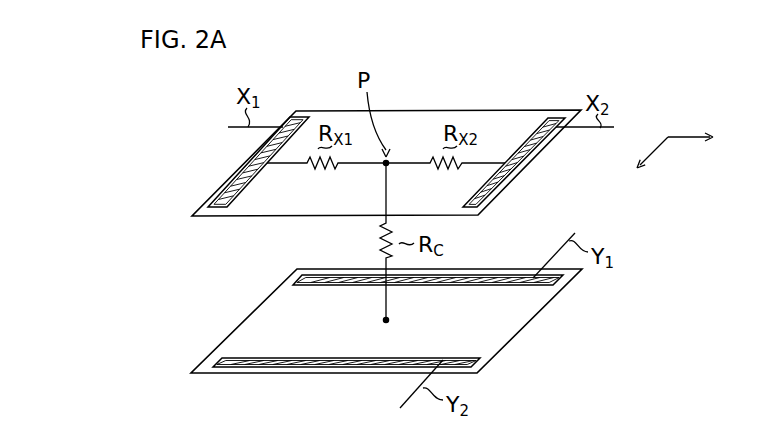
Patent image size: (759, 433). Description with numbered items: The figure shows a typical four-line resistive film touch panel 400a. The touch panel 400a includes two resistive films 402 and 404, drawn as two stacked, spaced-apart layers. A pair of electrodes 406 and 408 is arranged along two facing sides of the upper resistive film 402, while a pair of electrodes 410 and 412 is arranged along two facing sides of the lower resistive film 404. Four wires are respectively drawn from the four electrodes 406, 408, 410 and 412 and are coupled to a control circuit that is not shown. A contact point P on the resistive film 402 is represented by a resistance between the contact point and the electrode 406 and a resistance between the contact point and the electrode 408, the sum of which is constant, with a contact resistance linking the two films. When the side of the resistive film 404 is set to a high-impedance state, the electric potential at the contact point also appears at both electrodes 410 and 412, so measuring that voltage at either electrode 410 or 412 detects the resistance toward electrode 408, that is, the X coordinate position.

The four-line touch panel 400a is at (638, 110).
The resistive film 402 is at (421, 118).
The resistive film 404 is at (266, 307).
The electrode 406 is at (244, 166).
The electrode 408 is at (508, 171).
The electrode 410 is at (318, 281).
The electrode 412 is at (290, 367).